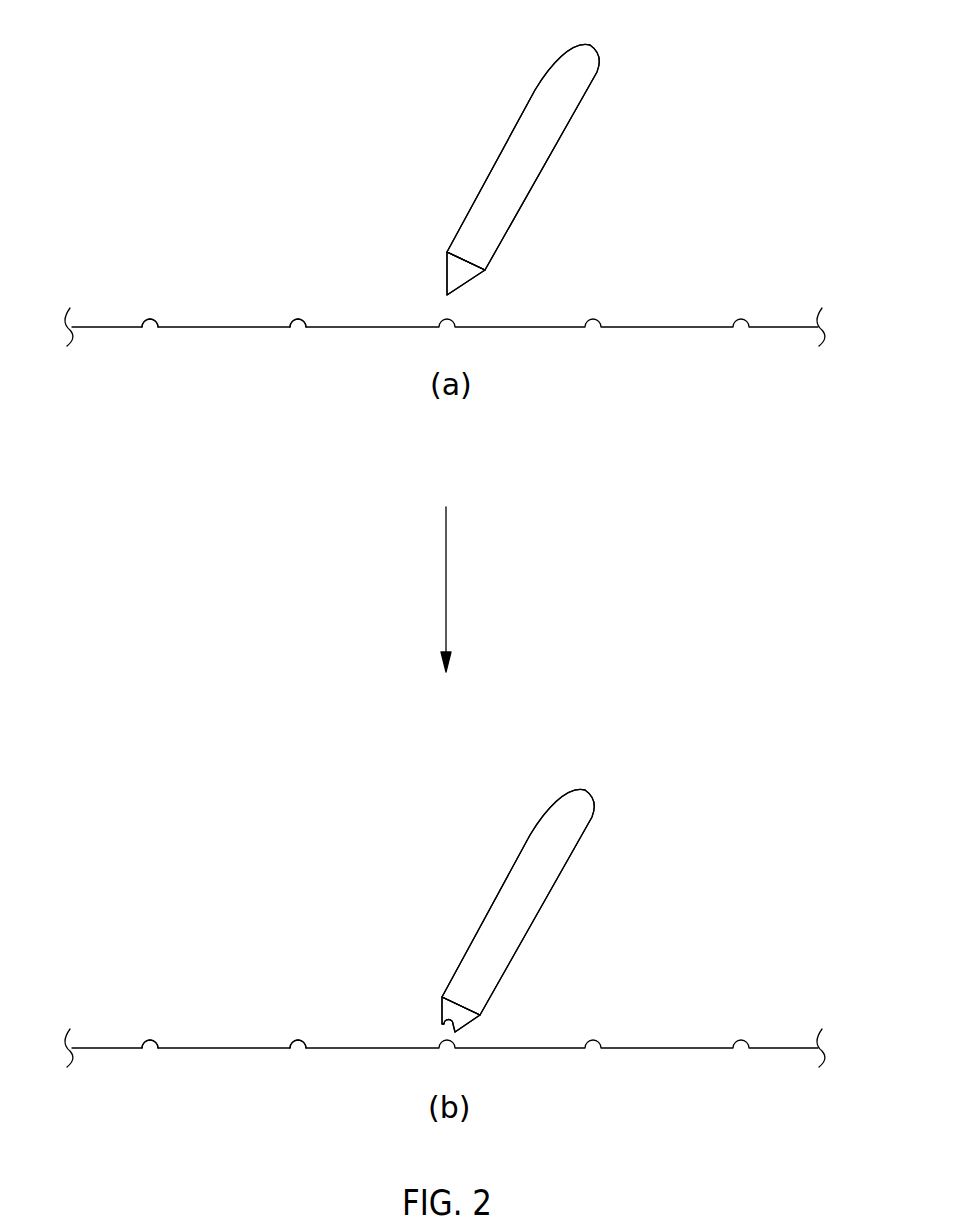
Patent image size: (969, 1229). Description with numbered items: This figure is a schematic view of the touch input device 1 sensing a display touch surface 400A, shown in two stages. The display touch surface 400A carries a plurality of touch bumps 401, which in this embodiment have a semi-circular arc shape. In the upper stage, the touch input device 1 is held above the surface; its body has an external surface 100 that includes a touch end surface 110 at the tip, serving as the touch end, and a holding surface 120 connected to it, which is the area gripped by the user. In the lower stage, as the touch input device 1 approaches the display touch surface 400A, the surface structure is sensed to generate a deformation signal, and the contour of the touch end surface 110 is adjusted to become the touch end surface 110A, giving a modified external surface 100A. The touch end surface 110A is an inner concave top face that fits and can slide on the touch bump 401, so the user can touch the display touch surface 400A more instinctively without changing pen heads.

The touch input device 1 is at (600, 58).
The external surface 100 is at (445, 145).
The external surface 100A is at (441, 889).
The touch end surface 110 is at (446, 291).
The touch end surface 110A is at (442, 1026).
The holding surface 120 is at (510, 137).
The touch bump 401 is at (298, 316).
The display touch surface 400A is at (767, 327).